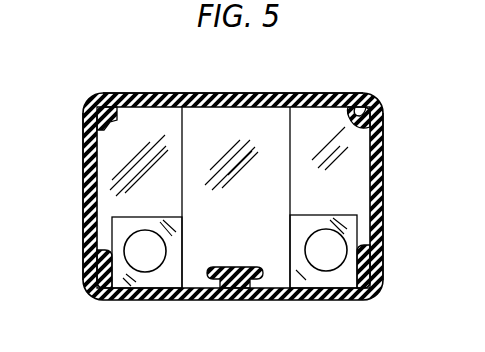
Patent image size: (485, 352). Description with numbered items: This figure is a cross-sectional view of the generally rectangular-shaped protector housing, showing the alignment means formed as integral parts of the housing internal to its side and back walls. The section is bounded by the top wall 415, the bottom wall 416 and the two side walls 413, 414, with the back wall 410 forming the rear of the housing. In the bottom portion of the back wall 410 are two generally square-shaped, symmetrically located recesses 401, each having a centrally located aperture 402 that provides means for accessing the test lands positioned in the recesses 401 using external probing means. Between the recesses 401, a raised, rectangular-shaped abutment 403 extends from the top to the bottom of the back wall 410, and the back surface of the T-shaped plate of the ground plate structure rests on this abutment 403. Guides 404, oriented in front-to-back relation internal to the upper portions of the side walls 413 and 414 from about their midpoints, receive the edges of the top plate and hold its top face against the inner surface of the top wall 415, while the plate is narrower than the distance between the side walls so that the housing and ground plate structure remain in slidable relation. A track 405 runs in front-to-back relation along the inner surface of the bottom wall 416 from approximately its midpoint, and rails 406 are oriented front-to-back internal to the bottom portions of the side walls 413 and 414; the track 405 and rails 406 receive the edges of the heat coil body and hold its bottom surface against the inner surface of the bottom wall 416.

The recesses 401 is at (378, 221).
The apertures 402 is at (340, 272).
The abutment 403 is at (262, 122).
The guides 404 is at (370, 110).
The track 405 is at (219, 301).
The rails 406 is at (88, 268).
The back wall 410 is at (317, 117).
The side wall 413 is at (84, 193).
The side wall 414 is at (379, 140).
The top wall 415 is at (137, 94).
The bottom wall 416 is at (147, 302).